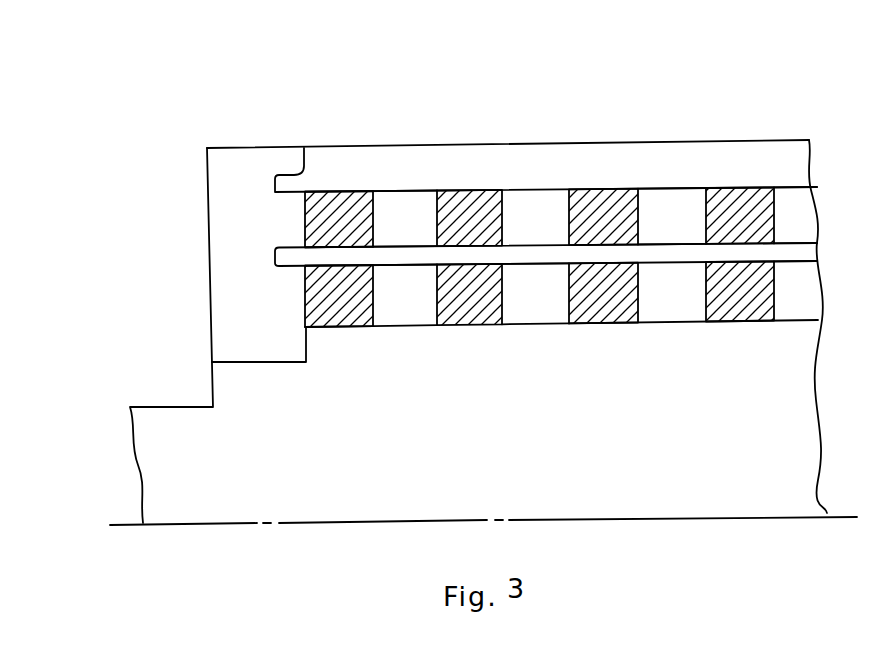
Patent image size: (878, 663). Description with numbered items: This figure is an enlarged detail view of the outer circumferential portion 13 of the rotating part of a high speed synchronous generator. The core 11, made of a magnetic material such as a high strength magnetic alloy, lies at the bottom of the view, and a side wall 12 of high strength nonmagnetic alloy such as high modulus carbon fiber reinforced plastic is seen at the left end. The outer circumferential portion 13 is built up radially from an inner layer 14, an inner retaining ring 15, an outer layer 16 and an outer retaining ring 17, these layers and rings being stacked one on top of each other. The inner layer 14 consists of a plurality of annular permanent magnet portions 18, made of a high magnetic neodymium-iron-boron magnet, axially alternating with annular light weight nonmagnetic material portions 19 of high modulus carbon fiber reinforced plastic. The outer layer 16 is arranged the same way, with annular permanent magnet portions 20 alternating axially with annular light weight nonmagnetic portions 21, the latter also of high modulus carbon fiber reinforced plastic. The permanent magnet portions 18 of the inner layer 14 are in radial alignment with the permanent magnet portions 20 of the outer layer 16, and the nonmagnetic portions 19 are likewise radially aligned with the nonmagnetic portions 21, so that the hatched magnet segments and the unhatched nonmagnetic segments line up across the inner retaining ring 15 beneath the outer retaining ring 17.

The core 11 is at (305, 480).
The side wall 12 is at (233, 235).
The outer circumferential portion 13 is at (609, 102).
The inner layer 14 is at (550, 310).
The inner retaining ring 15 is at (797, 252).
The outer layer 16 is at (665, 200).
The outer retaining ring 17 is at (430, 160).
The permanent magnet portion 18 is at (472, 300).
The light weight nonmagnetic material portion 19 is at (408, 295).
The permanent magnet portion 20 is at (468, 228).
The light weight nonmagnetic portion 21 is at (397, 220).